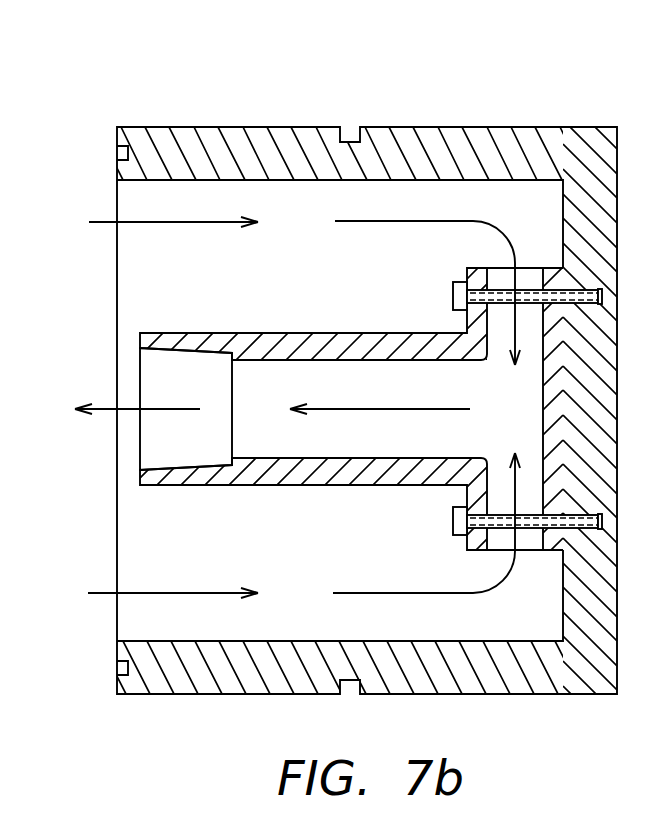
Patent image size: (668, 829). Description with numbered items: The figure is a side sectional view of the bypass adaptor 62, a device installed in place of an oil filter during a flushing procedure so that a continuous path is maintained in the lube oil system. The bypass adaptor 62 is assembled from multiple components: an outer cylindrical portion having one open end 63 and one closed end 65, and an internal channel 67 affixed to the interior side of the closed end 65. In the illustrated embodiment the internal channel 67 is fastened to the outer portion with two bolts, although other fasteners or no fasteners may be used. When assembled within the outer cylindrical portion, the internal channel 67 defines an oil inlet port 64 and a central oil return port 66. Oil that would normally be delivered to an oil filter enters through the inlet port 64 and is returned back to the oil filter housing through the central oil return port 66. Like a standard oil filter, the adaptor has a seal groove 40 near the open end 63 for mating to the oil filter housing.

The seal groove 40 is at (117, 153).
The bypass adaptor 62 is at (422, 110).
The open end 63 is at (117, 303).
The inlet port 64 is at (173, 542).
The closed end 65 is at (618, 137).
The central oil return port 66 is at (158, 375).
The internal channel 67 is at (375, 488).